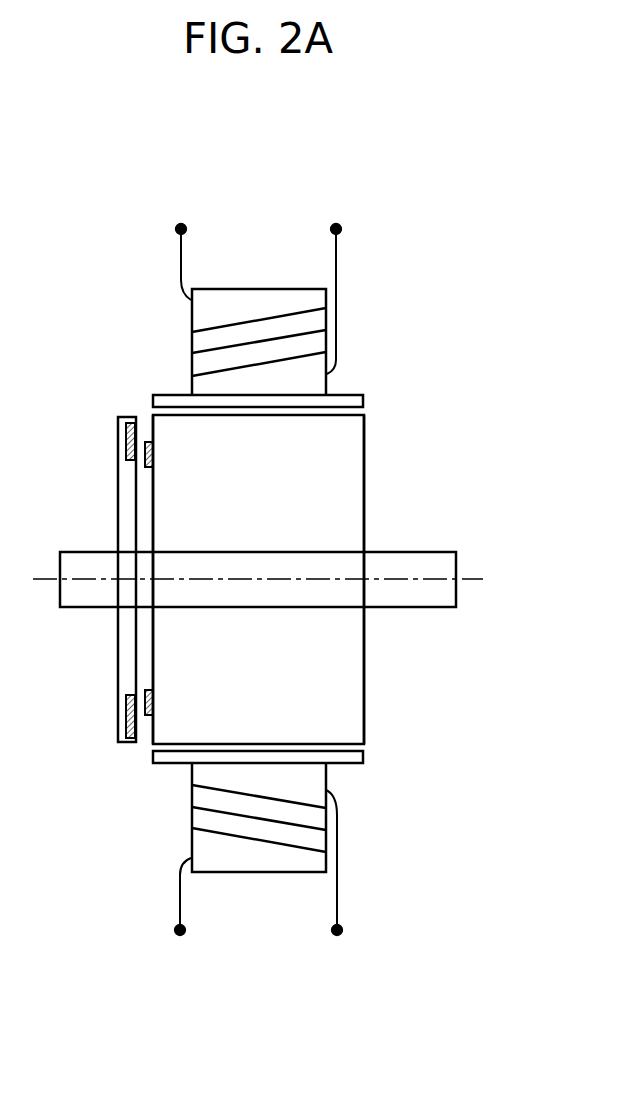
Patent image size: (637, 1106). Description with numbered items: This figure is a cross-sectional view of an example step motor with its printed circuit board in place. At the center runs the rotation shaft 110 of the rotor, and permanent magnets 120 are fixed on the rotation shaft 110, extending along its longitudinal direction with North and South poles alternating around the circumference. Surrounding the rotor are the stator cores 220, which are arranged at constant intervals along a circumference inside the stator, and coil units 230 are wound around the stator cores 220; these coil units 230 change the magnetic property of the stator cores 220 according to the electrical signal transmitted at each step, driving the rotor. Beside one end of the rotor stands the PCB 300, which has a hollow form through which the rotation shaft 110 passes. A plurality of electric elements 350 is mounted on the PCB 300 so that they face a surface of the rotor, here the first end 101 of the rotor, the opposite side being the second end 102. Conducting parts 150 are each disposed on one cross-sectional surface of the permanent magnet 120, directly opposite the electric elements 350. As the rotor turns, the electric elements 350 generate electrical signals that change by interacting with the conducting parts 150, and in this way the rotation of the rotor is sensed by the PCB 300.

The first end 101 is at (152, 652).
The second end 102 is at (365, 677).
The rotation shaft 110 is at (447, 560).
The permanent magnets 120 is at (348, 483).
The conducting parts 150 is at (150, 442).
The stator cores 220 is at (317, 386).
The coil units 230 is at (337, 291).
The PCB 300 is at (123, 503).
The electric elements 350 is at (128, 443).